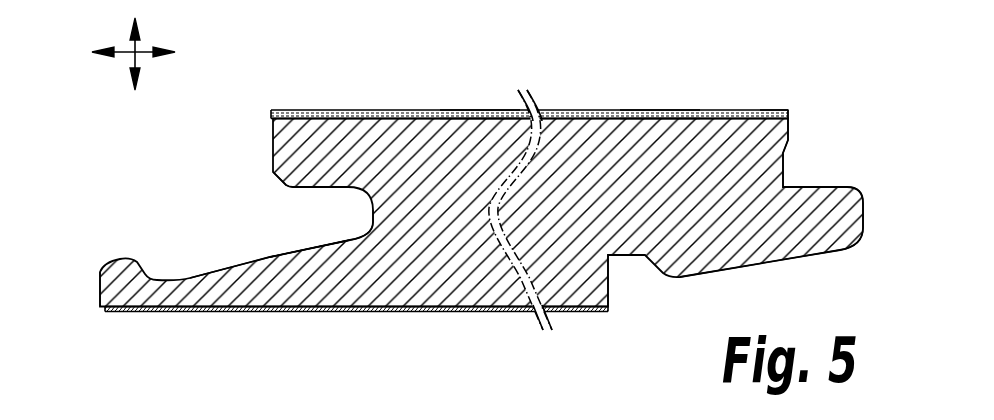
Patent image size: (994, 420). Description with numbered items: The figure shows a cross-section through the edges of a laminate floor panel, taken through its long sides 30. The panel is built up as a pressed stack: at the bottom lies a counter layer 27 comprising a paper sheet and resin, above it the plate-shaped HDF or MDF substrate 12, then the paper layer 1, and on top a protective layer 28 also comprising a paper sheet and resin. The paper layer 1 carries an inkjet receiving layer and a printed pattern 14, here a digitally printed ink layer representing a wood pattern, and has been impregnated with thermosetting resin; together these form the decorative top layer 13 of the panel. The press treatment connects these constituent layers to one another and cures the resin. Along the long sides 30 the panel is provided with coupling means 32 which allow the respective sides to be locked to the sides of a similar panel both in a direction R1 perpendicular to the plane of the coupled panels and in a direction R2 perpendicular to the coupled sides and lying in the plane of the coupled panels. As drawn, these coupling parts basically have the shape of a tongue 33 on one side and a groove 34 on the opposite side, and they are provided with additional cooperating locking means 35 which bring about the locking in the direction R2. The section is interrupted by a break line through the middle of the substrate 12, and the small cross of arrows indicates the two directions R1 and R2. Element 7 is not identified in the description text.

The paper layer 1 is at (317, 118).
The top layer 7 is at (658, 110).
The substrate 12 is at (452, 240).
The top layer 13 is at (806, 117).
The printed pattern 14 is at (346, 110).
The counter layer 27 is at (380, 312).
The protective layer 28 is at (448, 110).
The long sides 30 is at (163, 210).
The coupling means 32 is at (203, 178).
The tongue 33 is at (822, 186).
The groove 34 is at (270, 236).
The locking means 35 is at (105, 308).
The direction perpendicular to the plane of the coupled panels R1 is at (134, 42).
The direction perpendicular to the coupled sides and in the plane of the coupled pan R2 is at (143, 53).